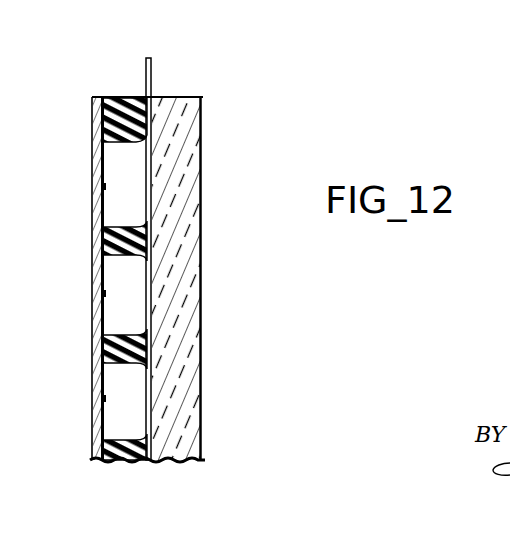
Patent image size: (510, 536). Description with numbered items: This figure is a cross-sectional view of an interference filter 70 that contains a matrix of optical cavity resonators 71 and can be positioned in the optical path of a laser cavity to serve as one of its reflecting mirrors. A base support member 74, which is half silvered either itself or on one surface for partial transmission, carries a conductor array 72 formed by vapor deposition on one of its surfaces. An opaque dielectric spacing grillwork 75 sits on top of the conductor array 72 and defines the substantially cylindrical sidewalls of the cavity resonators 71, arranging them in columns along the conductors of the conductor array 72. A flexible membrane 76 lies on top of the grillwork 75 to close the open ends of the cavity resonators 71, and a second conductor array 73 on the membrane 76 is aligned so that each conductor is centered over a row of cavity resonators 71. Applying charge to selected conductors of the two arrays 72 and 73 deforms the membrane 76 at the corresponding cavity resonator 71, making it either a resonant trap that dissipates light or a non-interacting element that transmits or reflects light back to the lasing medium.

The interference filter 70 is at (272, 92).
The optical cavity resonators 71 is at (128, 190).
The conductor array 72 is at (151, 64).
The conductor array 73 is at (106, 295).
The base support member 74 is at (190, 409).
The dielectric spacing grillwork 75 is at (122, 463).
The flexible membrane 76 is at (95, 419).